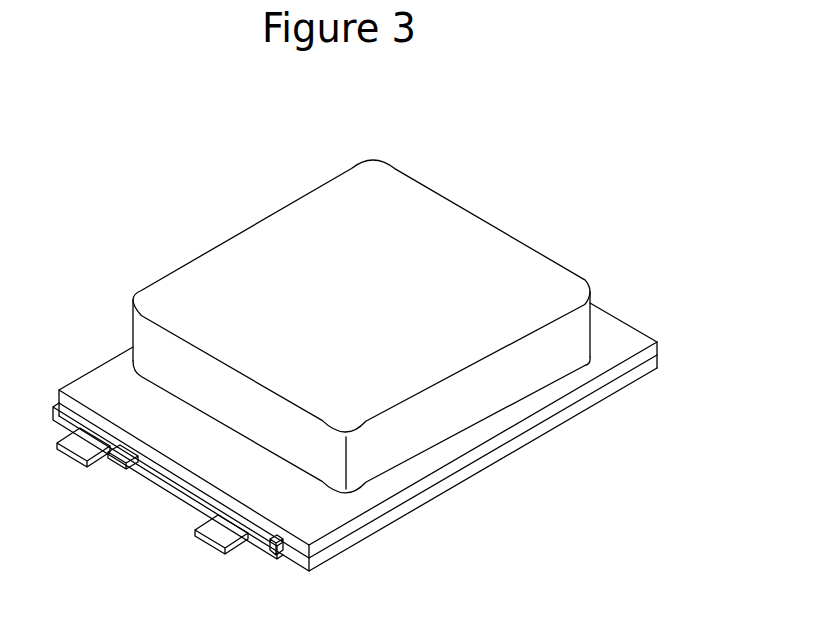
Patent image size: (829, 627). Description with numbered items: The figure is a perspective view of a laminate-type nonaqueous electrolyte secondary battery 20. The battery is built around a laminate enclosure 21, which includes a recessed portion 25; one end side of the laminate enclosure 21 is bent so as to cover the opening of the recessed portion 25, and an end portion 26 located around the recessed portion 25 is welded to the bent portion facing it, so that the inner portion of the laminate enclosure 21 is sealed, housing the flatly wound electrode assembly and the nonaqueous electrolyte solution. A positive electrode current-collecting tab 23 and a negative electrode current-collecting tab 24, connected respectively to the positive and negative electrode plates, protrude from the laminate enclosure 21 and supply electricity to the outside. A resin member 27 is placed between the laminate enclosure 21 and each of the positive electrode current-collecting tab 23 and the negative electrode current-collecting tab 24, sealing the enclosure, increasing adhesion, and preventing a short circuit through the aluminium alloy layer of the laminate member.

The laminate-type nonaqueous electrolyte secondary battery 20 is at (112, 170).
The laminate enclosure 21 is at (403, 212).
The positive electrode current-collecting tab 23 is at (218, 531).
The negative electrode current-collecting tab 24 is at (78, 446).
The recessed portion 25 is at (383, 447).
The end portion 26 is at (480, 431).
The resin member 27 is at (200, 497).